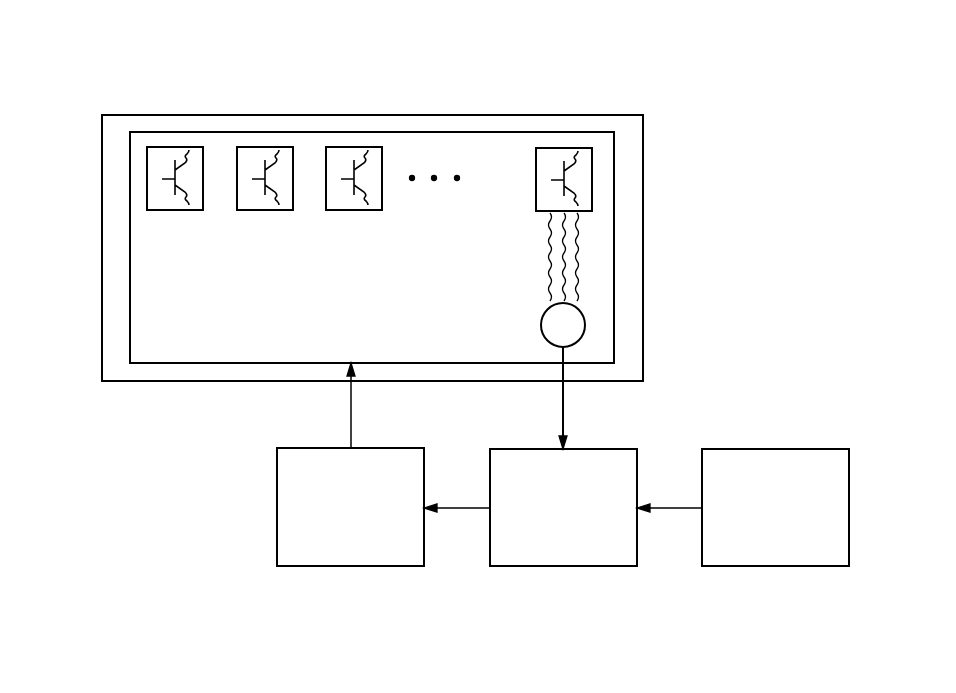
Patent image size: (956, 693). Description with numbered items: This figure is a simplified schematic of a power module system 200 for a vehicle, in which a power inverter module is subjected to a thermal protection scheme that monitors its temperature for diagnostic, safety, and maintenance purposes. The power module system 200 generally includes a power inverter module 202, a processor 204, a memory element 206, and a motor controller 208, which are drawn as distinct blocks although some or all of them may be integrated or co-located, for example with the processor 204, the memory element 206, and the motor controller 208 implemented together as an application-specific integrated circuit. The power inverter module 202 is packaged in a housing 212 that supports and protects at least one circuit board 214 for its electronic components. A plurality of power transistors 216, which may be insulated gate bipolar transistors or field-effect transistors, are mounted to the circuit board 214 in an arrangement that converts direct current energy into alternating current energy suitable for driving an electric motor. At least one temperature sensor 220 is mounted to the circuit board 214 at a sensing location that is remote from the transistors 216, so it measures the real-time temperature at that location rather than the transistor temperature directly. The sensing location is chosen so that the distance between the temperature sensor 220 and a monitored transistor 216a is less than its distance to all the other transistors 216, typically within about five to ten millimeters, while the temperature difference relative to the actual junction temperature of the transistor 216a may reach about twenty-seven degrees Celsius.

The power module system 200 is at (140, 58).
The power inverter module 202 is at (593, 114).
The housing 212 is at (643, 221).
The circuit board 214 is at (233, 303).
The power transistors 216 is at (178, 211).
The monitored transistor 216a is at (544, 212).
The temperature sensor 220 is at (548, 327).
The processor 204 is at (587, 520).
The memory element 206 is at (795, 520).
The motor controller 208 is at (375, 520).